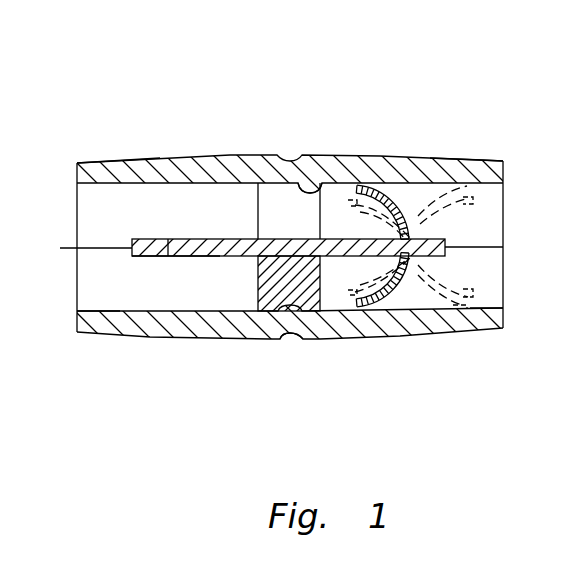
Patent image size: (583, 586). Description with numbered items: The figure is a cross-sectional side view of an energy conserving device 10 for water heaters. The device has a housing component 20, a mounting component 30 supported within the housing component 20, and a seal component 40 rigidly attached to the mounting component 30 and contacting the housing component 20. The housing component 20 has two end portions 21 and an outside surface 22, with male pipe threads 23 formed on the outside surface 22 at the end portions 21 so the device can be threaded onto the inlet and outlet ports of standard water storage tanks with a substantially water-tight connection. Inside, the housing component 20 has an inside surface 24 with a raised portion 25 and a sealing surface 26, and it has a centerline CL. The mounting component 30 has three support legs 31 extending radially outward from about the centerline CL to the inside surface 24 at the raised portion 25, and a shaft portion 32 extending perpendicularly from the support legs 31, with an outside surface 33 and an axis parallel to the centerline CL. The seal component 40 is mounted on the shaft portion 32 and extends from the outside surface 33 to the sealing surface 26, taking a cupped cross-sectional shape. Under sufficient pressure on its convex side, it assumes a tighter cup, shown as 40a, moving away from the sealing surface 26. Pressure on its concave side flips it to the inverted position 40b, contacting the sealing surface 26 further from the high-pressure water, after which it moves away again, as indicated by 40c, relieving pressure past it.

The energy conserving device 10 is at (322, 130).
The housing component 20 is at (228, 155).
The end portions 21 is at (103, 163).
The outside surface 22 is at (323, 341).
The male pipe threads 23 is at (138, 164).
The inside surface 24 is at (95, 312).
The raised portion 25 is at (325, 187).
The sealing surface 26 is at (484, 307).
The mounting component 30 is at (253, 302).
The support legs 31 is at (251, 190).
The shaft portion 32 is at (190, 239).
The outside surface 33 is at (218, 257).
The seal component 40 is at (397, 308).
The seal component in tighter cupped shape 40a is at (343, 303).
The inverted seal component 40b is at (432, 191).
The inverted seal component in relieving position 40c is at (457, 207).
The centerline CL is at (264, 249).